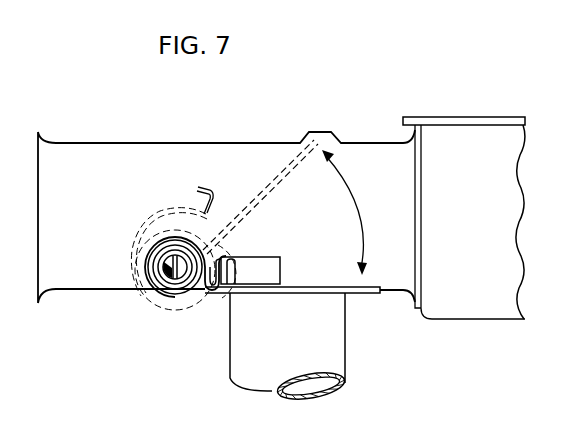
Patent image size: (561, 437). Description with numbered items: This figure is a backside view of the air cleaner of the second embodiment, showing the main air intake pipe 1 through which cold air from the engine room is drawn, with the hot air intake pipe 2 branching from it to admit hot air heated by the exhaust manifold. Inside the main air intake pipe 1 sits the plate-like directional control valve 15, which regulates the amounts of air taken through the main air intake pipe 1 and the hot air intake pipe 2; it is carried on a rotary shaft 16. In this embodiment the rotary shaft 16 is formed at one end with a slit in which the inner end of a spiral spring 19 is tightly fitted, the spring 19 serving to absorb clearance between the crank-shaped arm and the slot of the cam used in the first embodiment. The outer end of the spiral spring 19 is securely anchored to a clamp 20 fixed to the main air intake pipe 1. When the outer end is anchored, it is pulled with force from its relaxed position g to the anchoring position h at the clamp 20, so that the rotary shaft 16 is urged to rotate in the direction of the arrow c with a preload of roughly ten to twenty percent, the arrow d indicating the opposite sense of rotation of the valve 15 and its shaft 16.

The main air intake pipe 1 is at (80, 143).
The hot air intake pipe 2 is at (346, 339).
The directional control valve 15 is at (258, 192).
The rotary shaft 16 is at (158, 291).
The spiral spring 19 is at (163, 300).
The clamp 20 is at (222, 290).
The relaxed position g is at (193, 193).
The arrow d is at (342, 209).
The arrow c is at (366, 269).
The anchoring position h is at (257, 271).